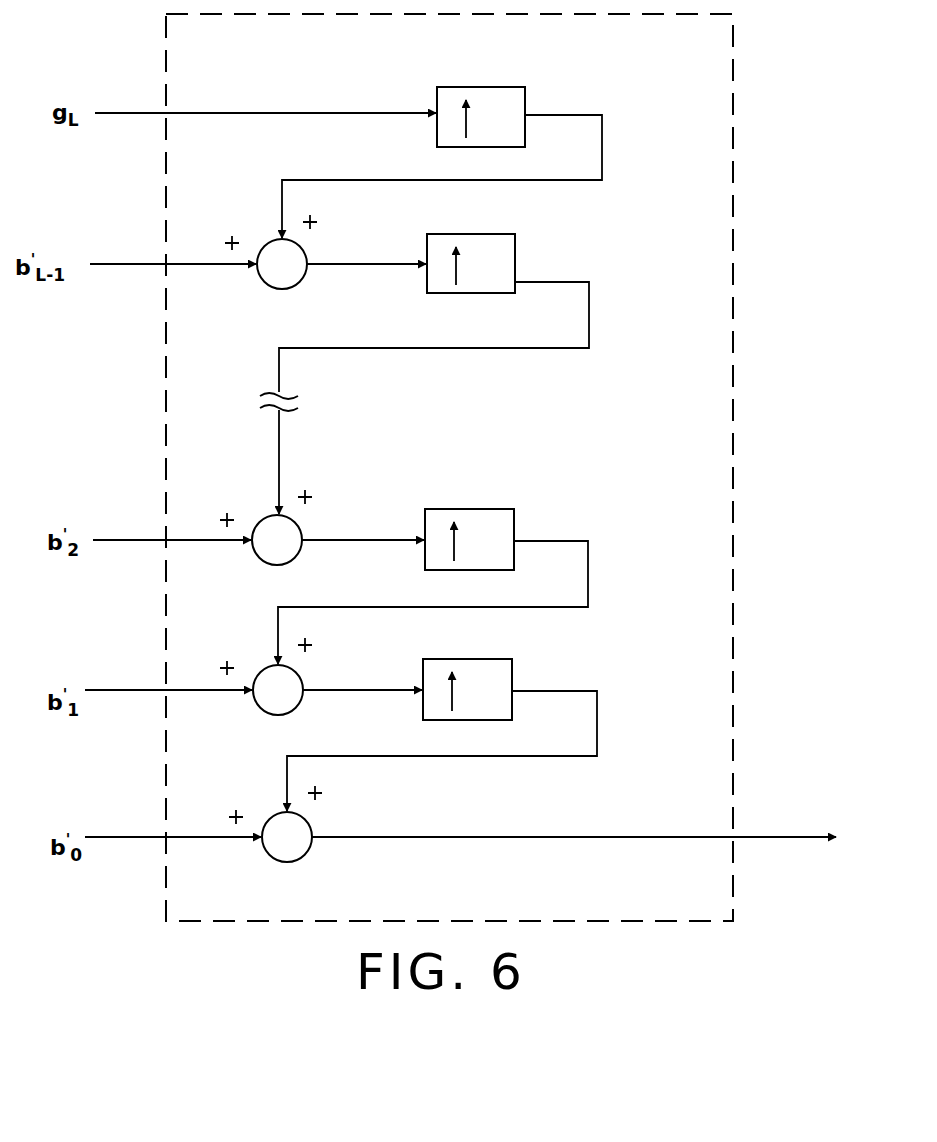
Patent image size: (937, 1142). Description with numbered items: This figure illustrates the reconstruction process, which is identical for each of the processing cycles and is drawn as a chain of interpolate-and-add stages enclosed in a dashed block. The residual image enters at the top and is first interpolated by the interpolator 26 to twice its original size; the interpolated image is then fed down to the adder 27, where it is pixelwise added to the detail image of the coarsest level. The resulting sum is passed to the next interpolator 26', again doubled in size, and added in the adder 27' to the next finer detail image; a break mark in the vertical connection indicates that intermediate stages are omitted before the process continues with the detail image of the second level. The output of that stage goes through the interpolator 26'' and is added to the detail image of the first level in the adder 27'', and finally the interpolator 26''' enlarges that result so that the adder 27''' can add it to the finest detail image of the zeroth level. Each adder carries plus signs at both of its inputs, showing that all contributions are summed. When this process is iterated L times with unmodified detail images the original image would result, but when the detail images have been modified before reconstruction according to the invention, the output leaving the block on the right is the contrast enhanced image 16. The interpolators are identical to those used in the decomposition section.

The interpolator 26 is at (510, 113).
The interpolator 26' is at (506, 263).
The interpolator 26'' is at (508, 527).
The interpolator 26''' is at (509, 682).
The adder 27 is at (313, 251).
The adder 27' is at (311, 527).
The adder 27'' is at (318, 679).
The adder 27''' is at (333, 833).
The contrast enhanced image 16 is at (765, 835).